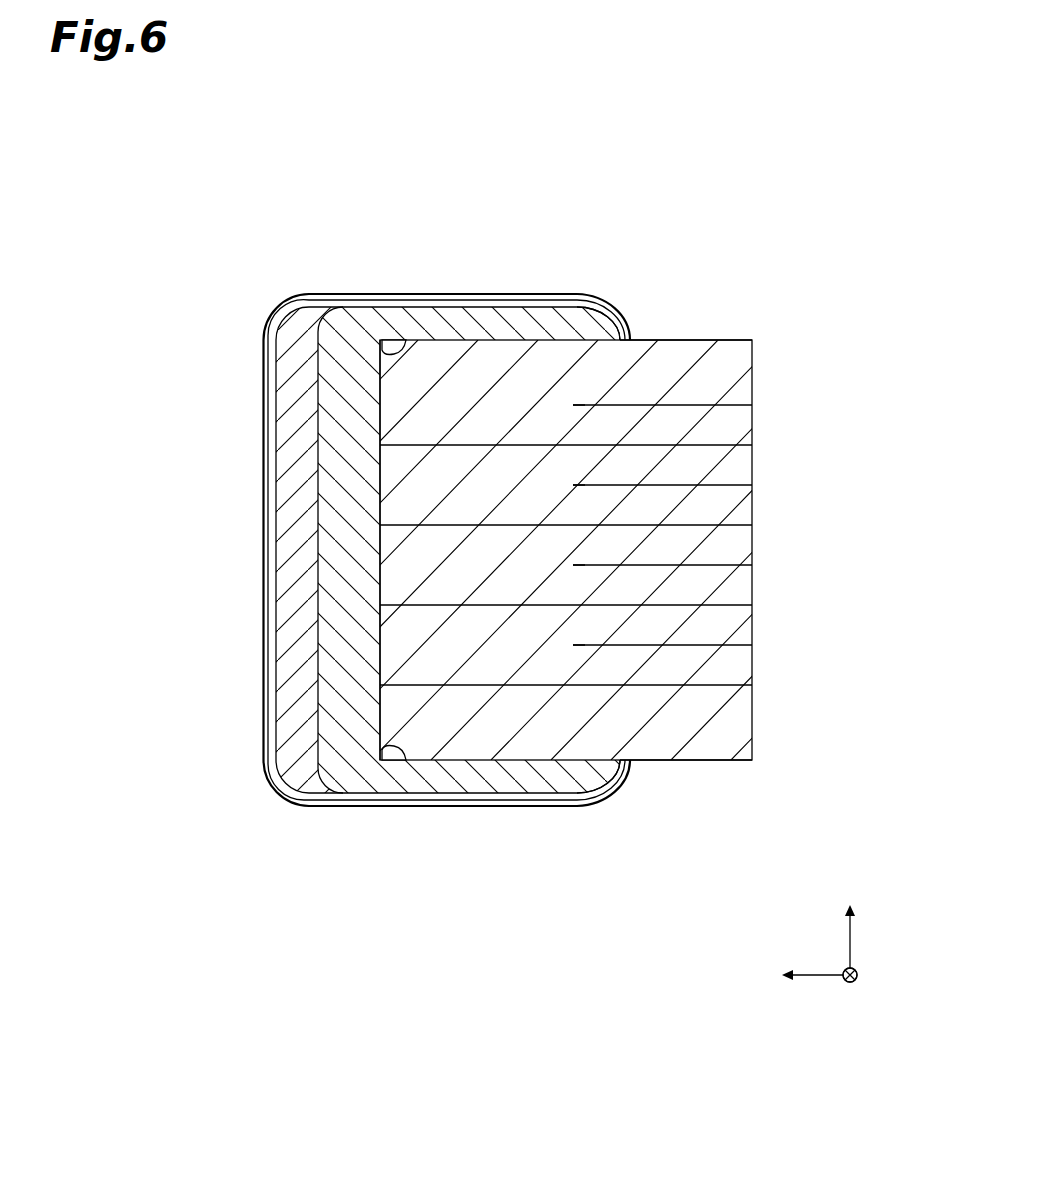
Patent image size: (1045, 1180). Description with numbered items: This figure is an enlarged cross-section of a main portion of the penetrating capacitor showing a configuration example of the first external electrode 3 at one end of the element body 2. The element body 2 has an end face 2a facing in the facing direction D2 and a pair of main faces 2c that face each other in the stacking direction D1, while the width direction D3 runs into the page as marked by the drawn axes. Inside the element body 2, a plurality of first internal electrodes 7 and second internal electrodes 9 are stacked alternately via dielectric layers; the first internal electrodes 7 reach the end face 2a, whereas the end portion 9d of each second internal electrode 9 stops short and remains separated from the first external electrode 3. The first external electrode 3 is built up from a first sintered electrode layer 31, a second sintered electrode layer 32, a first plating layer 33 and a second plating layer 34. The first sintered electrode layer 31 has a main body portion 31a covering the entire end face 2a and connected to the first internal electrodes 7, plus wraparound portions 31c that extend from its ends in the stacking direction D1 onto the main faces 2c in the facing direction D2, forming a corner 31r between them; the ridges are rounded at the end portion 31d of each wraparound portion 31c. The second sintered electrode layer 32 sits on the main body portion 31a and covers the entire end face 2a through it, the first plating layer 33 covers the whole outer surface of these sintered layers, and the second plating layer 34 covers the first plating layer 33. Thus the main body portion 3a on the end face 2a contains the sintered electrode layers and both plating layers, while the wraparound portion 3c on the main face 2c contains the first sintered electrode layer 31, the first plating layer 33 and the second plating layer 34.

The element body 2 is at (713, 338).
The end face 2a is at (378, 623).
The main face 2c is at (687, 340).
The first external electrode 3 is at (406, 548).
The main body portion 3a is at (262, 500).
The wraparound portion 3c is at (595, 286).
The first internal electrode 7 is at (442, 445).
The second internal electrode 9 is at (698, 405).
The end portion 9d is at (573, 405).
The first sintered electrode layer 31 is at (318, 396).
The main body portion 31a is at (338, 557).
The wraparound portion 31c is at (503, 327).
The end portion 31d is at (631, 337).
The corner 31r is at (400, 345).
The second sintered electrode layer 32 is at (313, 322).
The first plating layer 33 is at (445, 307).
The second plating layer 34 is at (338, 291).
The stacking direction D1 is at (857, 927).
The facing direction D2 is at (790, 975).
The width direction D3 is at (872, 990).